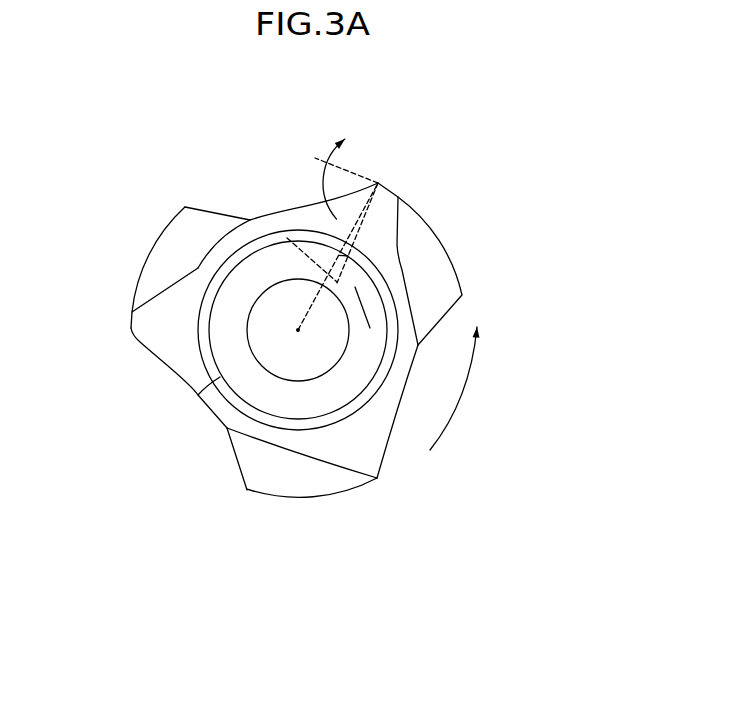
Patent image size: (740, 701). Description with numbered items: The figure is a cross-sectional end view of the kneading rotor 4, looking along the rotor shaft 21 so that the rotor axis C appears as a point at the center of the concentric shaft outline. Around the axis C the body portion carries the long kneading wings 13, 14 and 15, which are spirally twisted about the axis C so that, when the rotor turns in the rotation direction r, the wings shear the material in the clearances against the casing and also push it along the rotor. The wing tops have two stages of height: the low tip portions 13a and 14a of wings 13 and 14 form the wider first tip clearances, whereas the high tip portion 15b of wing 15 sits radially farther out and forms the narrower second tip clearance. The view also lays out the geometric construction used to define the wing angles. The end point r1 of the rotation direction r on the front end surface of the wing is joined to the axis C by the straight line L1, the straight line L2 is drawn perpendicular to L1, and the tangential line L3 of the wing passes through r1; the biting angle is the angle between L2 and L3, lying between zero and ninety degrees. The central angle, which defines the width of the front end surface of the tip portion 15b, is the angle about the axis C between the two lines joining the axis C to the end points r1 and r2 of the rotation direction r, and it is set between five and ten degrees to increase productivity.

The kneading rotor 4 is at (348, 301).
The kneading wing 13 is at (338, 502).
The low tip portion 13a is at (335, 495).
The kneading wing 14 is at (147, 271).
The low tip portion 14a is at (130, 323).
The kneading wing 15 is at (461, 239).
The high tip portion 15b is at (431, 227).
The rotor shaft 21 is at (199, 400).
The rotor axis C is at (296, 330).
The straight line L1 is at (292, 207).
The straight line L2 is at (378, 183).
The tangential line L3 is at (297, 204).
The end point of the rotation direction r1 is at (380, 180).
The end point of the rotation direction r2 is at (400, 197).
The rotation direction r is at (463, 388).